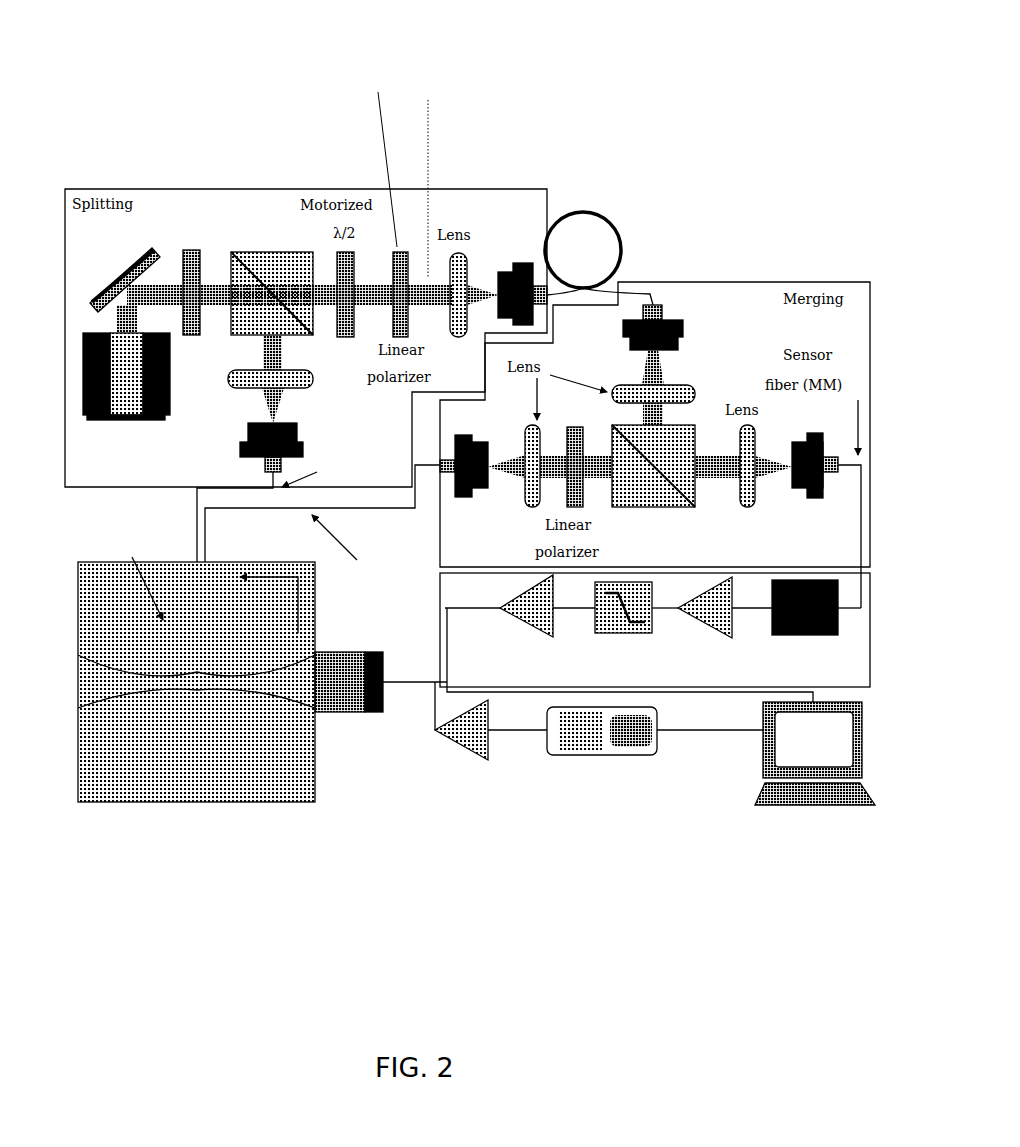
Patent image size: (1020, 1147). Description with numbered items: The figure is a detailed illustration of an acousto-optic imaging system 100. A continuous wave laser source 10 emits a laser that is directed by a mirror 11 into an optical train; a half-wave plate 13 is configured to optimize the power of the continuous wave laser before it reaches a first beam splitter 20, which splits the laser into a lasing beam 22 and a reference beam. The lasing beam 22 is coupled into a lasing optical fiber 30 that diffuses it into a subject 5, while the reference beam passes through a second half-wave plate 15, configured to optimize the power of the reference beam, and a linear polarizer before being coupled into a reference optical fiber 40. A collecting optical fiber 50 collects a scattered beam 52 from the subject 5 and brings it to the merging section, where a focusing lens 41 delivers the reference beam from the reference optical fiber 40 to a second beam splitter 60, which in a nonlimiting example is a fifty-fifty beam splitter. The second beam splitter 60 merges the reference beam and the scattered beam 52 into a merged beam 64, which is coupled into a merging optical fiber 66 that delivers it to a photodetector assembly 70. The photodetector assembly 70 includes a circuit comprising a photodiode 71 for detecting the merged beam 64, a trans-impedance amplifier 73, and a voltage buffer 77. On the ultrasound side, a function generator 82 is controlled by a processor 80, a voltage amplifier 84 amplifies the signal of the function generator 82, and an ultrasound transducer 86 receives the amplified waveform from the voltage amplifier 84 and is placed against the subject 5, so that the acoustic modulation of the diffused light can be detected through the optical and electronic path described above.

The acousto-optic imaging system 100 is at (738, 120).
The subject 5 is at (150, 812).
The continuous wave laser source 10 is at (82, 388).
The mirror 11 is at (100, 288).
The half-wave plate 13 is at (177, 223).
The half-wave plate 15 is at (337, 247).
The first beam splitter 20 is at (237, 247).
The lasing beam 22 is at (262, 408).
The lasing optical fiber 30 is at (232, 493).
The reference optical fiber 40 is at (568, 207).
The focusing lens 41 is at (672, 383).
The collecting optical fiber 50 is at (343, 507).
The scattered beam 52 is at (507, 477).
The second beam splitter 60 is at (697, 423).
The merged beam 64 is at (723, 483).
The merging optical fiber 66 is at (862, 487).
The photodetector assembly 70 is at (821, 562).
The photodiode 71 is at (813, 655).
The trans-impedance amplifier 73 is at (697, 630).
The voltage buffer 77 is at (535, 640).
The processor 80 is at (828, 810).
The function generator 82 is at (602, 812).
The voltage amplifier 84 is at (443, 813).
The ultrasound transducer 86 is at (357, 770).